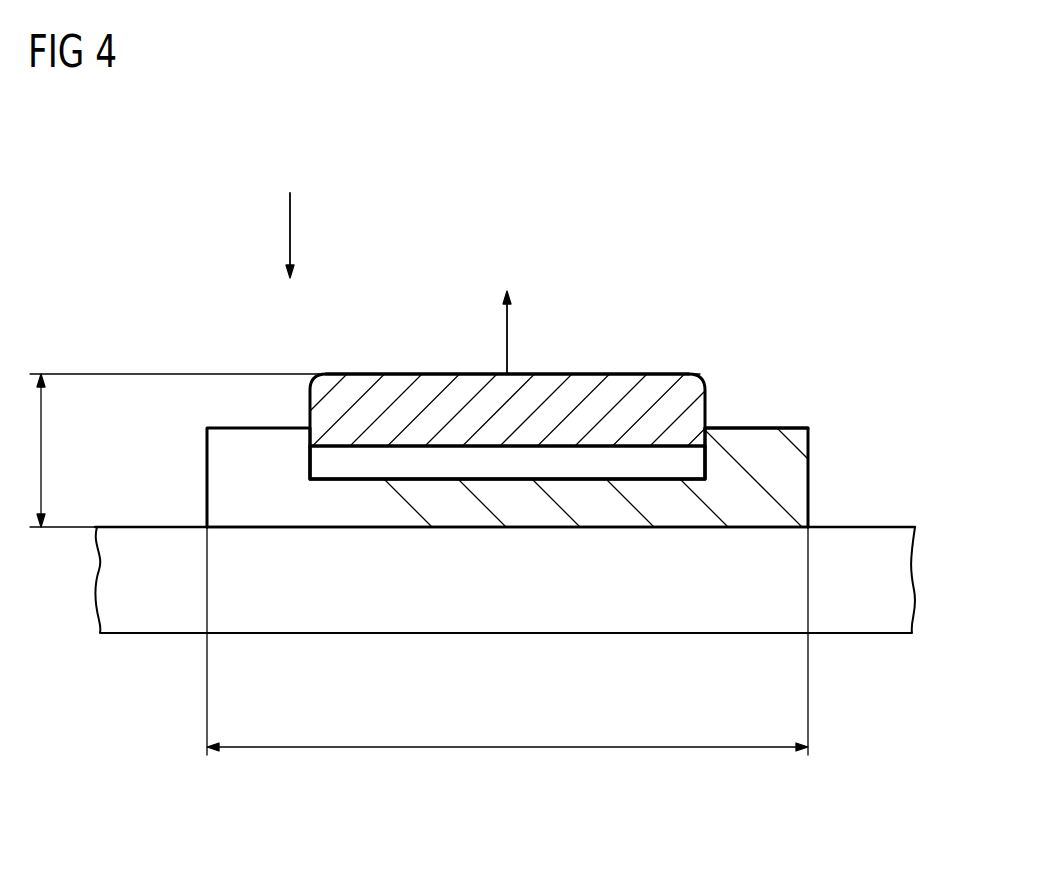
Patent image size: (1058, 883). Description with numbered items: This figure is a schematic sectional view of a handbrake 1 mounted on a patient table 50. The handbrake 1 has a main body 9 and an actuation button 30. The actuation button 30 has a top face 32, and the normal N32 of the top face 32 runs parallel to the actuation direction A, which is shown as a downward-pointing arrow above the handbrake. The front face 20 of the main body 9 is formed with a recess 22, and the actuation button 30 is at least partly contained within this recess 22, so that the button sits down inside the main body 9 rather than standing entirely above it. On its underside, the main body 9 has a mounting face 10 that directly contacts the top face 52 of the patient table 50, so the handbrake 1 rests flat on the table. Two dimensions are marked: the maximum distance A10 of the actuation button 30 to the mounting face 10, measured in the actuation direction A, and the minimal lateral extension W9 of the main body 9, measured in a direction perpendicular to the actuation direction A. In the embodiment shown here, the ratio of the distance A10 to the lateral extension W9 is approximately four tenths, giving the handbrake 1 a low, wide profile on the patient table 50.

The handbrake 1 is at (570, 197).
The main body 9 is at (782, 445).
The mounting face 10 is at (503, 540).
The front face 20 is at (740, 412).
The recess 22 is at (310, 462).
The actuation button 30 is at (362, 375).
The top face 32 is at (622, 374).
The normal of the top face N32 is at (507, 325).
The patient table 50 is at (685, 610).
The top face of the patient table 52 is at (872, 525).
The actuation direction A is at (290, 218).
The maximum distance A10 is at (42, 438).
The minimal lateral extension W9 is at (480, 752).